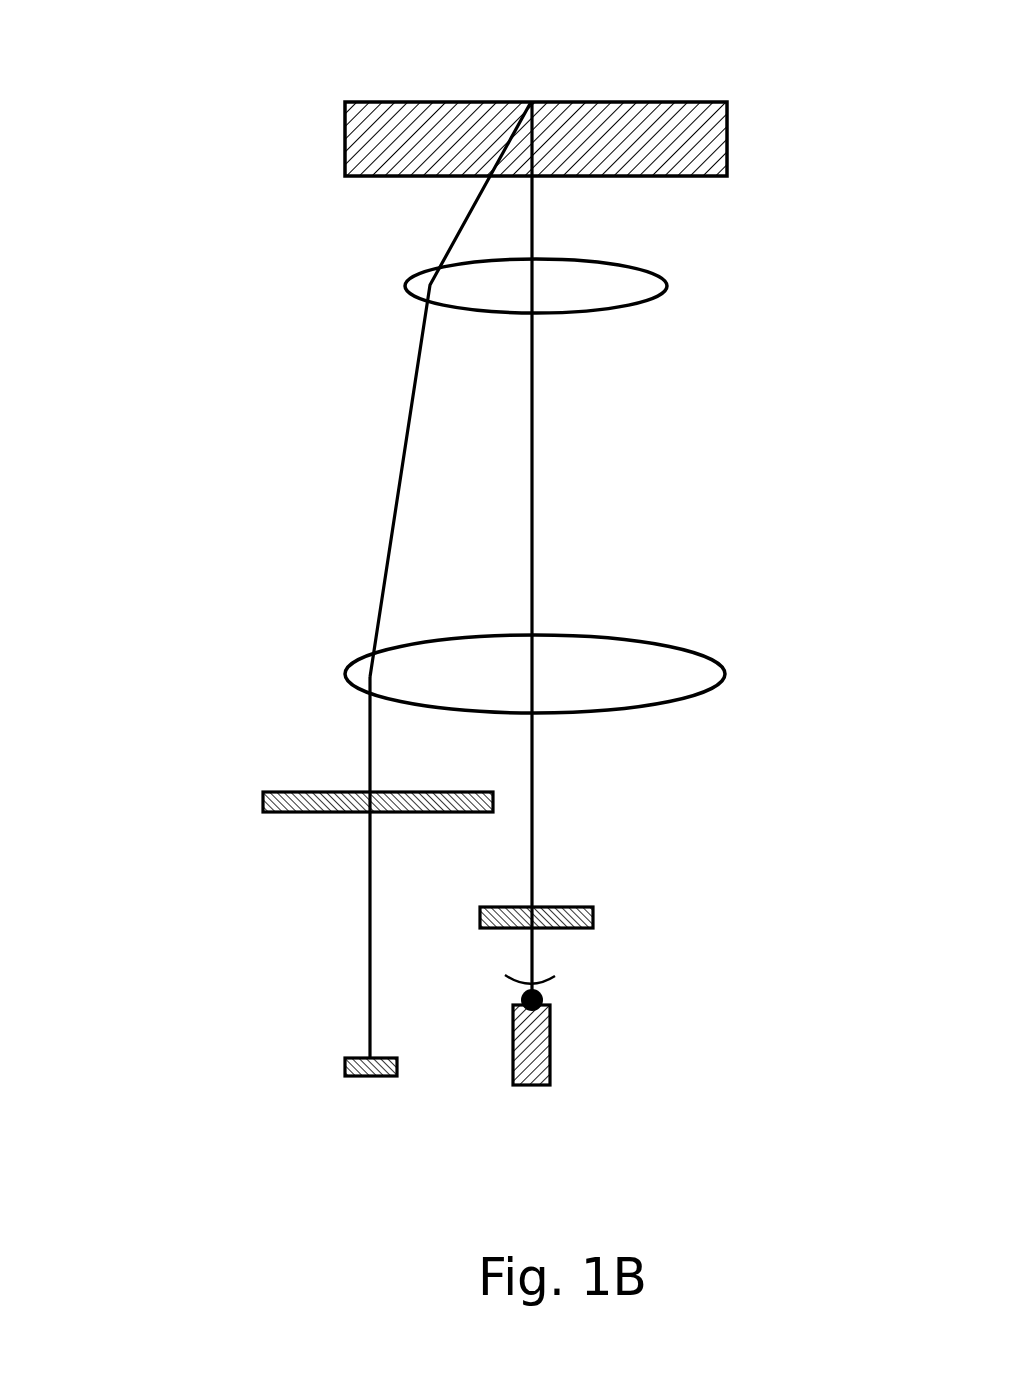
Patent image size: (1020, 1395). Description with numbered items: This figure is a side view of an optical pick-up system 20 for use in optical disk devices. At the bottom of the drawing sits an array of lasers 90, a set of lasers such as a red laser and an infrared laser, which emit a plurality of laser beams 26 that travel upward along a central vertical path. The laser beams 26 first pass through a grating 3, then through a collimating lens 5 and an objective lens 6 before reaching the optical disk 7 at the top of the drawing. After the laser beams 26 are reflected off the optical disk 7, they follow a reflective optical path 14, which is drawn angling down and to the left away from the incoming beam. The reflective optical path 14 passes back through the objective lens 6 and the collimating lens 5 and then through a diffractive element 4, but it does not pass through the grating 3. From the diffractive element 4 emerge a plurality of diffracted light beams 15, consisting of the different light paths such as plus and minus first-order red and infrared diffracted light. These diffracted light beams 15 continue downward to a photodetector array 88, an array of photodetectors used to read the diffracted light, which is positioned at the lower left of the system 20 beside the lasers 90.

The system 20 is at (303, 80).
The optical disk 7 is at (748, 52).
The objective lens 6 is at (662, 296).
The reflective optical path 14 is at (405, 430).
The collimating lens 5 is at (676, 648).
The diffractive element 4 is at (300, 791).
The diffracted light beams 15 is at (372, 976).
The grating 3 is at (560, 907).
The laser beams 26 is at (550, 978).
The lasers 90 is at (537, 1085).
The photodetector array 88 is at (365, 1078).